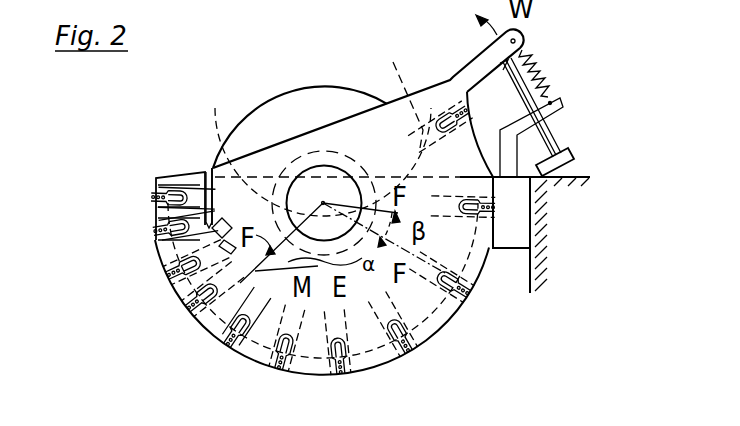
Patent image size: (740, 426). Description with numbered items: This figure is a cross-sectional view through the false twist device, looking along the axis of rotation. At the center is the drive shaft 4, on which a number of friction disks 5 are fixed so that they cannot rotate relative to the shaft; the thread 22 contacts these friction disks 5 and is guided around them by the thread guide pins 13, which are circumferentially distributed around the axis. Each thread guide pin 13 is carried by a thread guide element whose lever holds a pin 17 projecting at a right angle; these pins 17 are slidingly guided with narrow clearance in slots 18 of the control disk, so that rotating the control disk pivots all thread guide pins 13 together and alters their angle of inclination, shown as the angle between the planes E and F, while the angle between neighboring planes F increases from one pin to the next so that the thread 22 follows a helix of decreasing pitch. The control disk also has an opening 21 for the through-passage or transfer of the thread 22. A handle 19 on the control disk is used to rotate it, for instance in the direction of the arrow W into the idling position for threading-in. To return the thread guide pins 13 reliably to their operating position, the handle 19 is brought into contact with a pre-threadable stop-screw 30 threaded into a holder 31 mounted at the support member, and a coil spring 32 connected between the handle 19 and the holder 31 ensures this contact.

The drive shaft 4 is at (421, 129).
The friction disks 5 is at (297, 100).
The thread guide pin 13 is at (398, 89).
The pin 17 is at (156, 201).
The slots 18 is at (183, 197).
The handle 19 is at (523, 32).
The opening 21 is at (210, 167).
The thread 22 is at (209, 220).
The stop-screw 30 is at (553, 128).
The holder 31 is at (513, 128).
The coil spring 32 is at (548, 72).